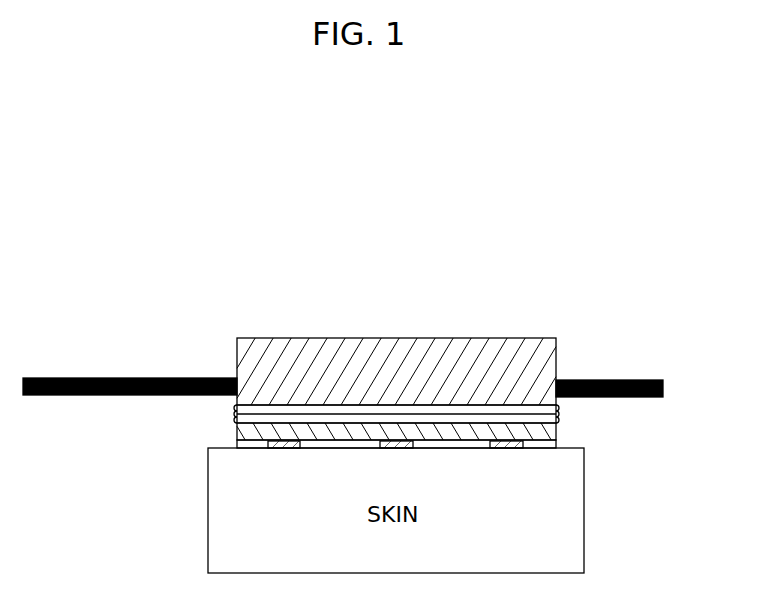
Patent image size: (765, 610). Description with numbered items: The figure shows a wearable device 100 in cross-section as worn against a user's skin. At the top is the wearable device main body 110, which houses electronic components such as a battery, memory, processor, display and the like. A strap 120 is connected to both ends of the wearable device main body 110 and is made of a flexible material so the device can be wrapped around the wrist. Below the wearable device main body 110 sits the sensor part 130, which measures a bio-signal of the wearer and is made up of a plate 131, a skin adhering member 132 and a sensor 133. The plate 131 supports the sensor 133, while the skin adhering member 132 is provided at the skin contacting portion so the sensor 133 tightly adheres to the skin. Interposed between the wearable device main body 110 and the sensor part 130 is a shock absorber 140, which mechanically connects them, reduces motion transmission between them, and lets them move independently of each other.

The wearable device 100 is at (563, 295).
The wearable device main body 110 is at (401, 338).
The strap 120 is at (612, 381).
The sensor part 130 is at (481, 460).
The plate 131 is at (558, 430).
The skin adhering member 132 is at (583, 447).
The sensor 133 is at (509, 449).
The shock absorber 140 is at (560, 413).